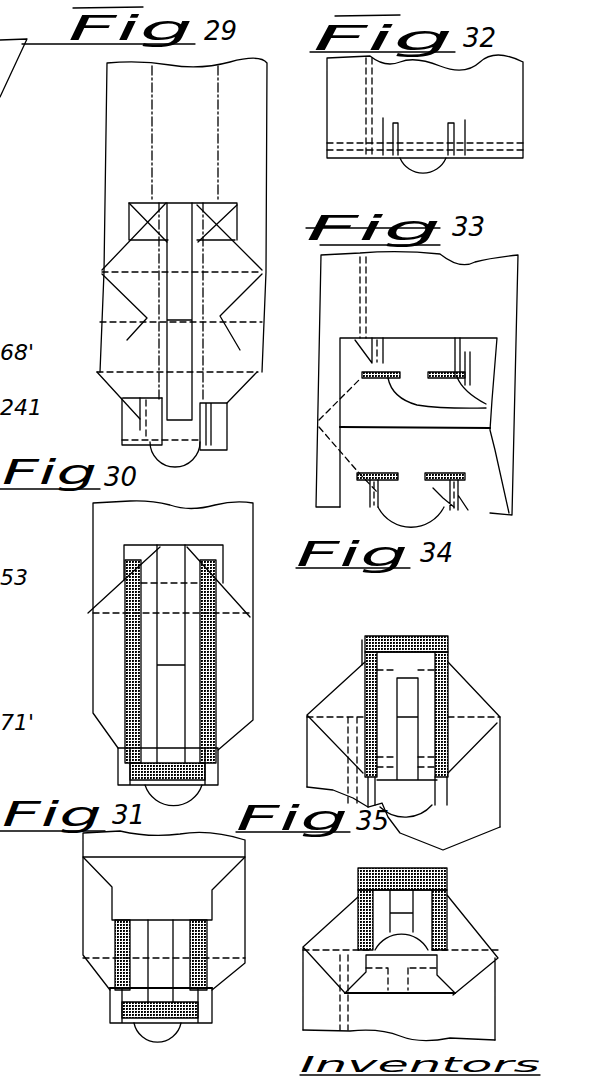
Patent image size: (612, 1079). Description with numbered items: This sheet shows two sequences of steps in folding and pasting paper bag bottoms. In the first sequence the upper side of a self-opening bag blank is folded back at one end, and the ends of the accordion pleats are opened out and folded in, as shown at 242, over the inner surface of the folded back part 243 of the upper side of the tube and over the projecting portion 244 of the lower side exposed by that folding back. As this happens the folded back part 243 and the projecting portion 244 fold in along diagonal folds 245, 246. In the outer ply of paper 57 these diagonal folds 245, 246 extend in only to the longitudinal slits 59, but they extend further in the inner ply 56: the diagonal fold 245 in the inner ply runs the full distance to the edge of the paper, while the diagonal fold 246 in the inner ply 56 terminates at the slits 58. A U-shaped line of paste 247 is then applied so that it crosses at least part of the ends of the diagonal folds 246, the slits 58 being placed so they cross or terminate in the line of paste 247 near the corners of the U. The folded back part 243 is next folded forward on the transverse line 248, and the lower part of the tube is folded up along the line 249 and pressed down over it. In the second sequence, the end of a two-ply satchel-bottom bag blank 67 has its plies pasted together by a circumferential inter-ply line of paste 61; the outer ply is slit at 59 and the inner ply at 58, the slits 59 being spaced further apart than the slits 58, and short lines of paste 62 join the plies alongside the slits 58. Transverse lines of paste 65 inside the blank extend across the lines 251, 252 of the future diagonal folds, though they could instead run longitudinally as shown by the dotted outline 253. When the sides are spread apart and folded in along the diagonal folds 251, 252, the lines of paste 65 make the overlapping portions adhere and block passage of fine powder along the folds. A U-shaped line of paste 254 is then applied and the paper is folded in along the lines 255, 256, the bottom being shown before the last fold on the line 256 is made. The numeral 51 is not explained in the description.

In FIG. 29, the retaining screw 51 is at (223, 428).
In FIG. 29, the inner ply 56 is at (167, 230).
In FIG. 29, the outer ply of paper 57 is at (124, 208).
In FIG. 29, the slits in the inner ply 58 is at (133, 432).
In FIG. 30, the slits in the inner ply 58 is at (118, 777).
In FIG. 33, the slits in the inner ply 58 is at (455, 360).
In FIG. 34, the slits in the inner ply 58 is at (437, 805).
In FIG. 29, the longitudinal slits in the outer ply 59 is at (137, 423).
In FIG. 32, the longitudinal slits in the outer ply 59 is at (376, 137).
In FIG. 33, the longitudinal slits in the outer ply 59 is at (353, 340).
In FIG. 34, the longitudinal slits in the outer ply 59 is at (448, 795).
In FIG. 32, the circumferential inter-ply line of paste 61 is at (523, 145).
In FIG. 32, the short lines of paste 62 is at (465, 120).
In FIG. 33, the transverse lines of paste 65 is at (486, 408).
In FIG. 34, the transverse lines of paste 65 is at (362, 663).
In FIG. 29, the bag blank 67 is at (271, 157).
In FIG. 32, the bag blank 67 is at (505, 80).
In FIG. 29, the folded-in ends of the accordion pleats 242 is at (146, 352).
In FIG. 29, the folded back part of the upper side 243 is at (172, 306).
In FIG. 30, the folded back part of the upper side 243 is at (161, 650).
In FIG. 29, the projecting portion of the lower side 244 is at (178, 362).
In FIG. 30, the projecting portion of the lower side 244 is at (167, 718).
In FIG. 29, the diagonal fold 245 is at (104, 266).
In FIG. 30, the diagonal fold 245 is at (105, 598).
In FIG. 29, the diagonal fold 246 is at (112, 388).
In FIG. 30, the diagonal fold 246 is at (110, 735).
In FIG. 30, the U-shaped line of paste 247 is at (130, 673).
In FIG. 30, the transverse line 248 is at (225, 620).
In FIG. 31, the transverse line 248 is at (227, 860).
In FIG. 31, the fold line 249 is at (215, 958).
In FIG. 33, the diagonal fold line 251 is at (481, 397).
In FIG. 34, the diagonal fold line 251 is at (480, 697).
In FIG. 33, the diagonal fold line 252 is at (370, 480).
In FIG. 34, the diagonal fold line 252 is at (478, 757).
In FIG. 33, the dotted outline 253 is at (468, 364).
In FIG. 34, the U-shaped line of paste 254 is at (443, 703).
In FIG. 34, the fold line 255 is at (450, 757).
In FIG. 35, the fold line 255 is at (442, 997).
In FIG. 34, the fold line 256 is at (407, 677).
In FIG. 35, the fold line 256 is at (423, 928).